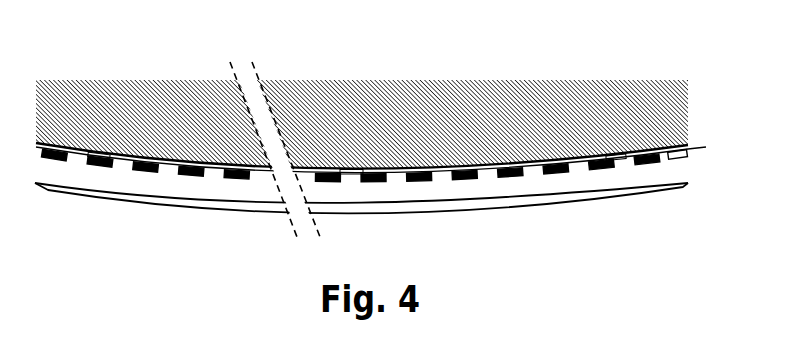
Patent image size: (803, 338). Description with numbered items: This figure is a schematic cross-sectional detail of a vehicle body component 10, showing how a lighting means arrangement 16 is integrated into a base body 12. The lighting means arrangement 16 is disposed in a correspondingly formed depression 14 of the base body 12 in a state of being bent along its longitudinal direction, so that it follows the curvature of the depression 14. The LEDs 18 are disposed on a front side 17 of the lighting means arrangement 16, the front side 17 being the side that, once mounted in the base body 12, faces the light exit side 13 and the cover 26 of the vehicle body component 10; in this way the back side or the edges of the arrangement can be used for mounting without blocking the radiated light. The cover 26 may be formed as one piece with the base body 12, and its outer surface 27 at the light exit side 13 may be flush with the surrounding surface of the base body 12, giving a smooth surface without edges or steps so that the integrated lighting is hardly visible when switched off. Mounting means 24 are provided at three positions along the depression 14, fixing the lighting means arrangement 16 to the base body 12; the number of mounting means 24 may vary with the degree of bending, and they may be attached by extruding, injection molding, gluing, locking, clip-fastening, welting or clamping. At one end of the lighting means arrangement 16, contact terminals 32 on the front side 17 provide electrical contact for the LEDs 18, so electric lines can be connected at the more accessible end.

The vehicle body component 10 is at (662, 72).
The base body 12 is at (202, 100).
The light exit side 13 is at (437, 218).
The depression 14 is at (668, 172).
The lighting means arrangement 16 is at (533, 172).
The front side 17 is at (397, 177).
The LEDs 18 is at (105, 165).
The mounting means 24 is at (88, 157).
The cover 26 is at (503, 203).
The outer surface 27 is at (632, 196).
The contact terminals 32 is at (687, 148).